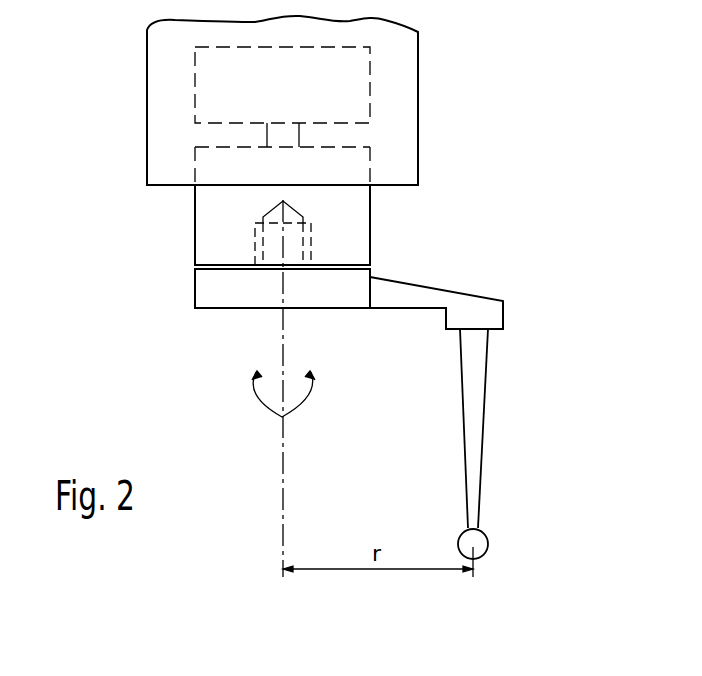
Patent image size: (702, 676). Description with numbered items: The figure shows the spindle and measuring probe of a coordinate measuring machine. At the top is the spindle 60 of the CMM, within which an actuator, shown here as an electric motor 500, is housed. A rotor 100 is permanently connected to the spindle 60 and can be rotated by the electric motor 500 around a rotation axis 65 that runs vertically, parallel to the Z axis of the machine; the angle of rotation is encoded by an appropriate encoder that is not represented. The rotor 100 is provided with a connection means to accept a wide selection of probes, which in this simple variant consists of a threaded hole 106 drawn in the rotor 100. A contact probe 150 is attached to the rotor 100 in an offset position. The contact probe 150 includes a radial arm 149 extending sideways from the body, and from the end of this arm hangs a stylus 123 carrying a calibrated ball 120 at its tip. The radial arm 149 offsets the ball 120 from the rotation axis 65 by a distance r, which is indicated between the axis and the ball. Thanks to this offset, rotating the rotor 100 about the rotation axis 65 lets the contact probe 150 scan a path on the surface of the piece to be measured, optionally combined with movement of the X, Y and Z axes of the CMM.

The spindle 60 is at (162, 140).
The electric motor 500 is at (348, 92).
The rotor 100 is at (215, 235).
The threaded hole 106 is at (310, 240).
The contact probe 150 is at (223, 290).
The rotation axis 65 is at (282, 458).
The radial arm 149 is at (462, 307).
The stylus 123 is at (473, 398).
The calibrated ball 120 is at (480, 543).